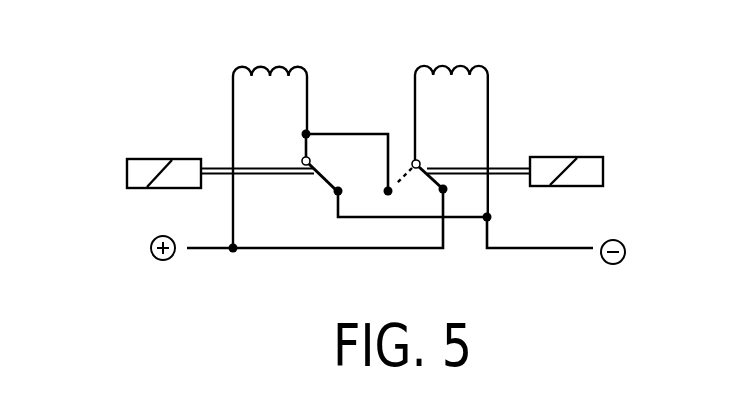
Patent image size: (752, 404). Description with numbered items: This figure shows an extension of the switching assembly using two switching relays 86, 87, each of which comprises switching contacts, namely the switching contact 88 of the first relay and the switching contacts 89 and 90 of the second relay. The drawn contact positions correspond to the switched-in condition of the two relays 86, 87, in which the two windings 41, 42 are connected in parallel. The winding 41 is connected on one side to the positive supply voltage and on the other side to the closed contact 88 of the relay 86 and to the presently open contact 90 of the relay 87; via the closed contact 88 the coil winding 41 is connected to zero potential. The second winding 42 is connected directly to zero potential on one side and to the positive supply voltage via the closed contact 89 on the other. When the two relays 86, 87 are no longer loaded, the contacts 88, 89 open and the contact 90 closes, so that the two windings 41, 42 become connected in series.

The winding 41 is at (288, 44).
The second winding 42 is at (458, 63).
The switching relay 86 is at (130, 170).
The switching relay 87 is at (603, 171).
The switching contact 88 is at (327, 182).
The switching contact 89 is at (422, 163).
The contact 90 is at (403, 179).